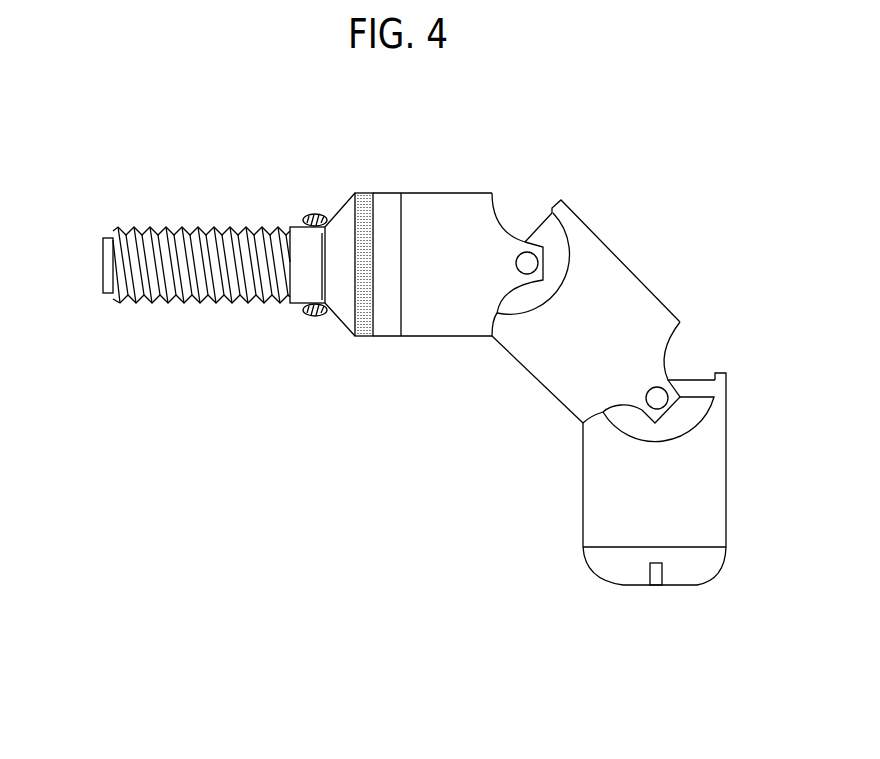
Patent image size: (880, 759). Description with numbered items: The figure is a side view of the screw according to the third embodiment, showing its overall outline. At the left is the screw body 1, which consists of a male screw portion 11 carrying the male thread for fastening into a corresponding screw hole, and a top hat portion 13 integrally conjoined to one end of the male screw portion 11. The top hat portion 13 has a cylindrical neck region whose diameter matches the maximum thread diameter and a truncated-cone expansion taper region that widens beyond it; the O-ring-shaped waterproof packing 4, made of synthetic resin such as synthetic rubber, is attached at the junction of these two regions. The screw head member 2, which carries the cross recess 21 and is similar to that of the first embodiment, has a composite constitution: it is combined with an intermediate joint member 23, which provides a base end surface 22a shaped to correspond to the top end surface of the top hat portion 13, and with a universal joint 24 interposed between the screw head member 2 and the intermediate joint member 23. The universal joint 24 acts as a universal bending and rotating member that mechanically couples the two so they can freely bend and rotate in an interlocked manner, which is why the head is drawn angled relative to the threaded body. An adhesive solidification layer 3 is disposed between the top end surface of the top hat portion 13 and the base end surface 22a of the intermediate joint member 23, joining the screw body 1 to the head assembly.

The screw body 1 is at (193, 241).
The male screw portion 11 is at (197, 226).
The waterproof packing 4 is at (306, 214).
The top hat portion 13 is at (345, 197).
The adhesive solidification layer 3 is at (362, 267).
The base end surface 22a is at (358, 340).
The intermediate joint member 23 is at (390, 193).
The universal joint 24 is at (631, 270).
The screw head member 2 is at (662, 505).
The cross recess 21 is at (655, 586).